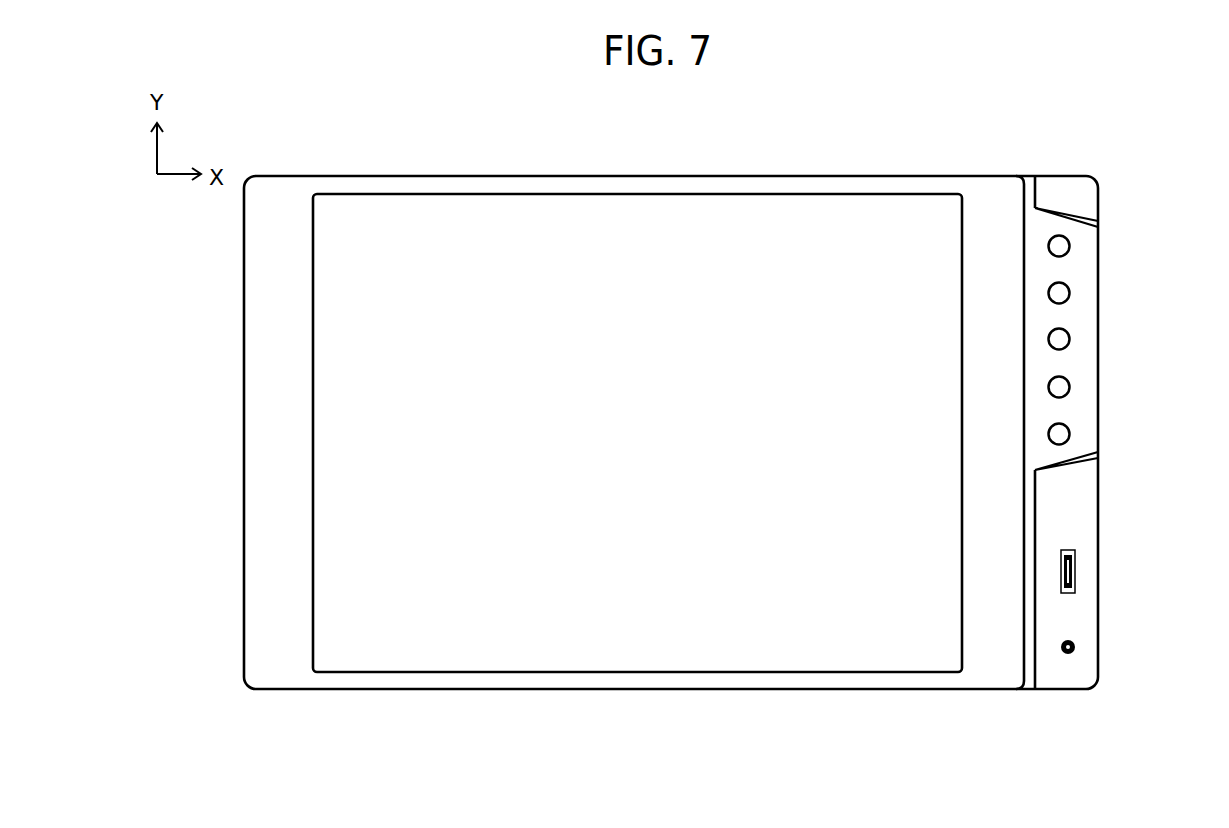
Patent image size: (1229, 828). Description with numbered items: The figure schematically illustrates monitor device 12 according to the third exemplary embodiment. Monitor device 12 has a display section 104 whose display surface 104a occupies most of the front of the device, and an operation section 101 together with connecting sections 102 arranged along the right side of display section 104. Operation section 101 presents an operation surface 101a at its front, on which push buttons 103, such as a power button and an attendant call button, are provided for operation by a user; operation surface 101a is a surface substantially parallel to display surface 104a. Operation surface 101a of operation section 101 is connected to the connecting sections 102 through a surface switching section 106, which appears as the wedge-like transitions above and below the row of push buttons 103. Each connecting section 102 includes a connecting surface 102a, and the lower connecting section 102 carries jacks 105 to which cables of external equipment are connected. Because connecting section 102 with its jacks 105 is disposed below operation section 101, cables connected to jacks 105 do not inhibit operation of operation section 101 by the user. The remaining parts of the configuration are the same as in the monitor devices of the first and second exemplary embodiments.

The monitor device 12 is at (836, 152).
The operation section 101 is at (1129, 340).
The operation surface 101a is at (1129, 340).
The connecting section 102 is at (1068, 198).
The connecting surface 102a is at (1121, 425).
The push button 103 is at (1060, 387).
The display section 104 is at (585, 480).
The display surface 104a is at (344, 305).
The jack 105 is at (1075, 647).
The surface switching section 106 is at (1097, 222).